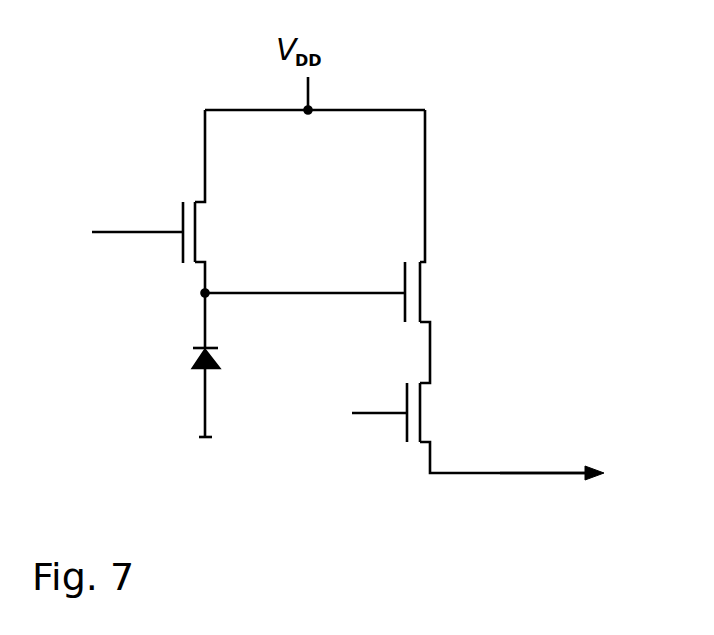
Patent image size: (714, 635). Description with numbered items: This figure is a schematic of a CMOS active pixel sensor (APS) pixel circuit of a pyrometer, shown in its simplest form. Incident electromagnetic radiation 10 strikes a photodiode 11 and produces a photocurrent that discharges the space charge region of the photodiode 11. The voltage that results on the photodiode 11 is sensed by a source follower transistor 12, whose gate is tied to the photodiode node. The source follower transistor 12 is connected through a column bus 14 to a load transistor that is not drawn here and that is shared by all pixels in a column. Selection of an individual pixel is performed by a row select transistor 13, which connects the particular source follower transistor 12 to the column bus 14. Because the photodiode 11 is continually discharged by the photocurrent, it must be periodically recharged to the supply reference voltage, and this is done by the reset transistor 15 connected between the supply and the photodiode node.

The incident electromagnetic radiation 10 is at (184, 351).
The photodiode 11 is at (217, 355).
The source follower transistor 12 is at (422, 273).
The row select transistor 13 is at (422, 393).
The column bus 14 is at (567, 473).
The reset transistor 15 is at (197, 217).